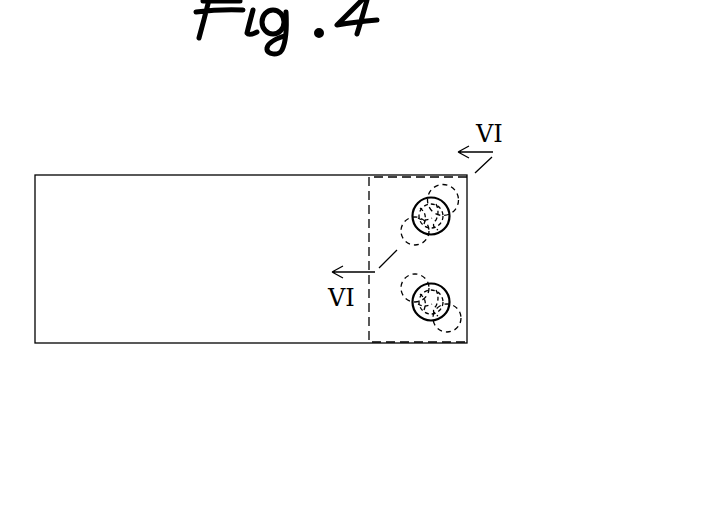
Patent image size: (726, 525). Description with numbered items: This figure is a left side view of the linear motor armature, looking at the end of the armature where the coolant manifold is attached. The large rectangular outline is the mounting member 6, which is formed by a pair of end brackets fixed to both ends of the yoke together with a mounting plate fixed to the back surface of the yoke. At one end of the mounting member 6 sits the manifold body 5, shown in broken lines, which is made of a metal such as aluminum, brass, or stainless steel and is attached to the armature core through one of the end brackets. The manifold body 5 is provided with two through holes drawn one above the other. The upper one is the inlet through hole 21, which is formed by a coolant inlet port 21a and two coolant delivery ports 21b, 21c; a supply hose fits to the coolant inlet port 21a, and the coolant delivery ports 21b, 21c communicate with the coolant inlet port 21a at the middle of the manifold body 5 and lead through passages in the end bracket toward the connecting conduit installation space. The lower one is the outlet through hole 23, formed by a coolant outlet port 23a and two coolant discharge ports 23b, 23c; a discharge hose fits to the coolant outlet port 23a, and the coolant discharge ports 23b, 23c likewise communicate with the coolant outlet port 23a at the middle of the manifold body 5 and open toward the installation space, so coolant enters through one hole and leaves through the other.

The manifold body 5 is at (460, 263).
The mounting member 6 is at (189, 325).
The inlet through hole 21 is at (422, 198).
The coolant inlet port 21a is at (447, 226).
The coolant delivery port 21b is at (456, 195).
The coolant delivery port 21c is at (407, 222).
The outlet through hole 23 is at (412, 312).
The coolant outlet port 23a is at (450, 302).
The coolant discharge port 23b is at (430, 282).
The coolant discharge port 23c is at (455, 327).